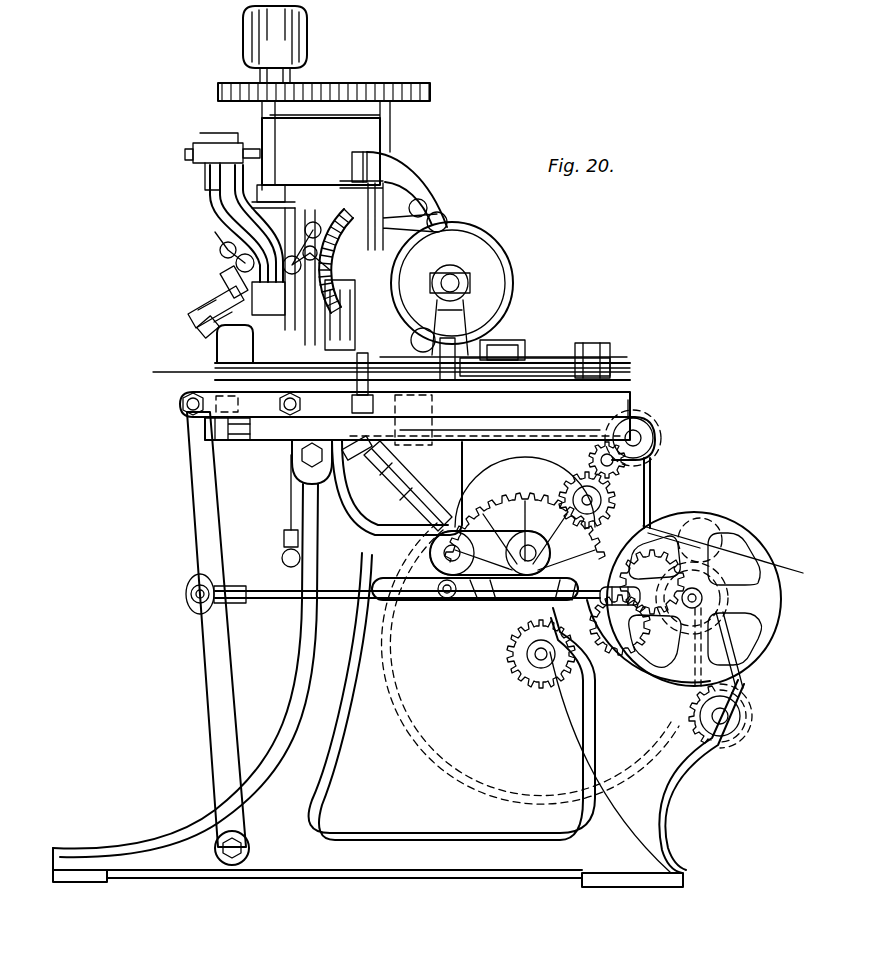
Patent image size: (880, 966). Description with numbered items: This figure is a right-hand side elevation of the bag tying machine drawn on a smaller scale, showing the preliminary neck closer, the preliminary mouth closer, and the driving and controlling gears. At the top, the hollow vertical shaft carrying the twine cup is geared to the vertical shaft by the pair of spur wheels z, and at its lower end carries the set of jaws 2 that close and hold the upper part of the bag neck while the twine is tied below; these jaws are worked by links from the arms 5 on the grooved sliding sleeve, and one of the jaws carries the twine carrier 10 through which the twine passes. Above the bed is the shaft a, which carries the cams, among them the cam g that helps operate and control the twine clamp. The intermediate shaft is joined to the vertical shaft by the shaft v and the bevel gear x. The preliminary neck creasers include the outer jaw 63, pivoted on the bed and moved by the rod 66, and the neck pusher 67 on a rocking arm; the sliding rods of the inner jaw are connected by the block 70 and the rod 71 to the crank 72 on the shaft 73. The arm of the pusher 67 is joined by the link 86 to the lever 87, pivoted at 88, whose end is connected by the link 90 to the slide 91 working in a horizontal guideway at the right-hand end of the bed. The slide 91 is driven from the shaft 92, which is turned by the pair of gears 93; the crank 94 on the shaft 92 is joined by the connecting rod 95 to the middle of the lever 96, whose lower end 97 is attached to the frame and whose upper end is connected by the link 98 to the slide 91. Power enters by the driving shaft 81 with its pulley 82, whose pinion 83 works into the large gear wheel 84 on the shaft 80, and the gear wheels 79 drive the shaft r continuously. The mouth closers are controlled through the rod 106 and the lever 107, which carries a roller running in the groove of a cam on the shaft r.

The spur wheels z is at (350, 84).
The cam g is at (354, 175).
The shaft a is at (467, 281).
The twine carrier 10 is at (199, 303).
The jaws 2 is at (212, 318).
The link 90 is at (460, 360).
The link 86 is at (505, 350).
The lever 87 is at (543, 360).
The pivot 88 is at (592, 348).
The outer jaw 63 is at (377, 377).
The neck pusher 67 is at (232, 380).
The link 98 is at (237, 423).
The rod 66 is at (246, 433).
The slide 91 is at (318, 410).
The bevel gear x is at (354, 449).
The block 70 is at (424, 447).
The rod 71 is at (515, 433).
The crank 72 is at (593, 460).
The shaft 73 is at (646, 437).
The shaft v is at (410, 492).
The rod 106 is at (290, 509).
The arms 5 is at (453, 553).
The shaft r is at (527, 553).
The lever 107 is at (320, 560).
The connecting rod 95 is at (432, 604).
The lever 96 is at (220, 648).
The lower end 97 is at (230, 858).
The gear wheels 79 is at (515, 620).
The shaft 80 is at (540, 661).
The shaft 92 is at (697, 597).
The gears 93 is at (673, 620).
The crank 94 is at (633, 648).
The driving shaft 81 is at (722, 722).
The pinion 83 is at (708, 748).
The large gear wheel 84 is at (474, 784).
The pulley 82 is at (684, 874).